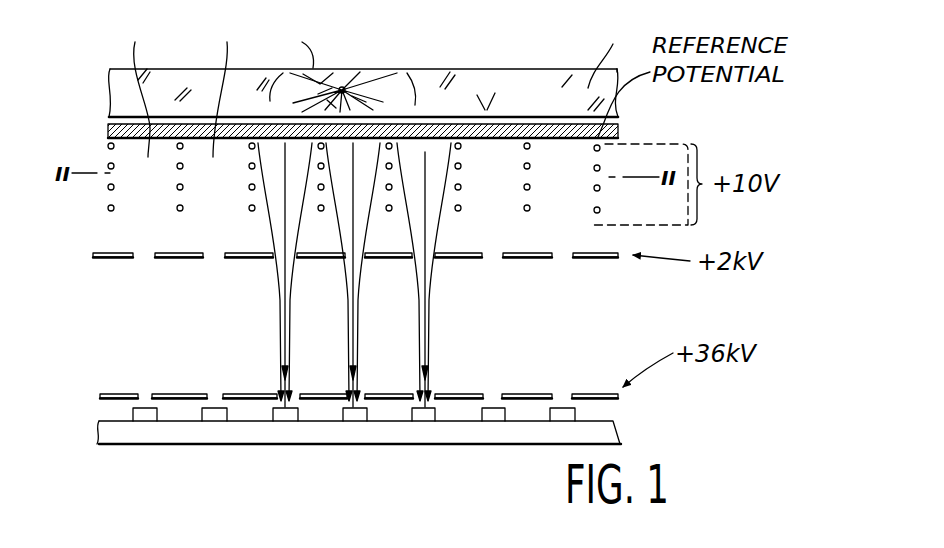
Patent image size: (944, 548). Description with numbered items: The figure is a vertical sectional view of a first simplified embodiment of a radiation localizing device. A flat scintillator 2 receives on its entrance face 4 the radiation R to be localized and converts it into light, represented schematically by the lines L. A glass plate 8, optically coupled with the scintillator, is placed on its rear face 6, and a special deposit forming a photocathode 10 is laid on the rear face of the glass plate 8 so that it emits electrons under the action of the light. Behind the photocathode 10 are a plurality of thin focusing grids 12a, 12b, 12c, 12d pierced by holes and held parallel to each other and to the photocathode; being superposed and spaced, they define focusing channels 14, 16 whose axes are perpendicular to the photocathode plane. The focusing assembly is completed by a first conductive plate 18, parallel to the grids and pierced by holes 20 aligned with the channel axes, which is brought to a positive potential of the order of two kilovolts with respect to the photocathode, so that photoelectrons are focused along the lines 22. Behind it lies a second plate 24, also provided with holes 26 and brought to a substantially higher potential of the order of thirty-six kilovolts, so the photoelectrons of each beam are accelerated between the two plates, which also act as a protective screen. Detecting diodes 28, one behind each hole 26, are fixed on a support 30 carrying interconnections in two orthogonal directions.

The scintillator 2 is at (604, 55).
The entrance face 4 is at (546, 66).
The rear face 6 is at (499, 121).
The glass plate 8 is at (612, 144).
The photocathode 10 is at (565, 140).
The focusing grid 12a is at (108, 146).
The focusing grid 12b is at (108, 166).
The focusing grid 12c is at (108, 187).
The focusing grid 12d is at (110, 211).
The focusing channel 14 is at (142, 88).
The focusing channel 16 is at (229, 88).
The first conductive plate 18 is at (355, 290).
The hole 20 is at (367, 258).
The focusing lines 22 is at (433, 230).
The second plate 24 is at (594, 393).
The hole 26 is at (349, 393).
The detecting diode 28 is at (566, 417).
The support 30 is at (366, 394).
The light L is at (302, 44).
The radiation R is at (342, 80).